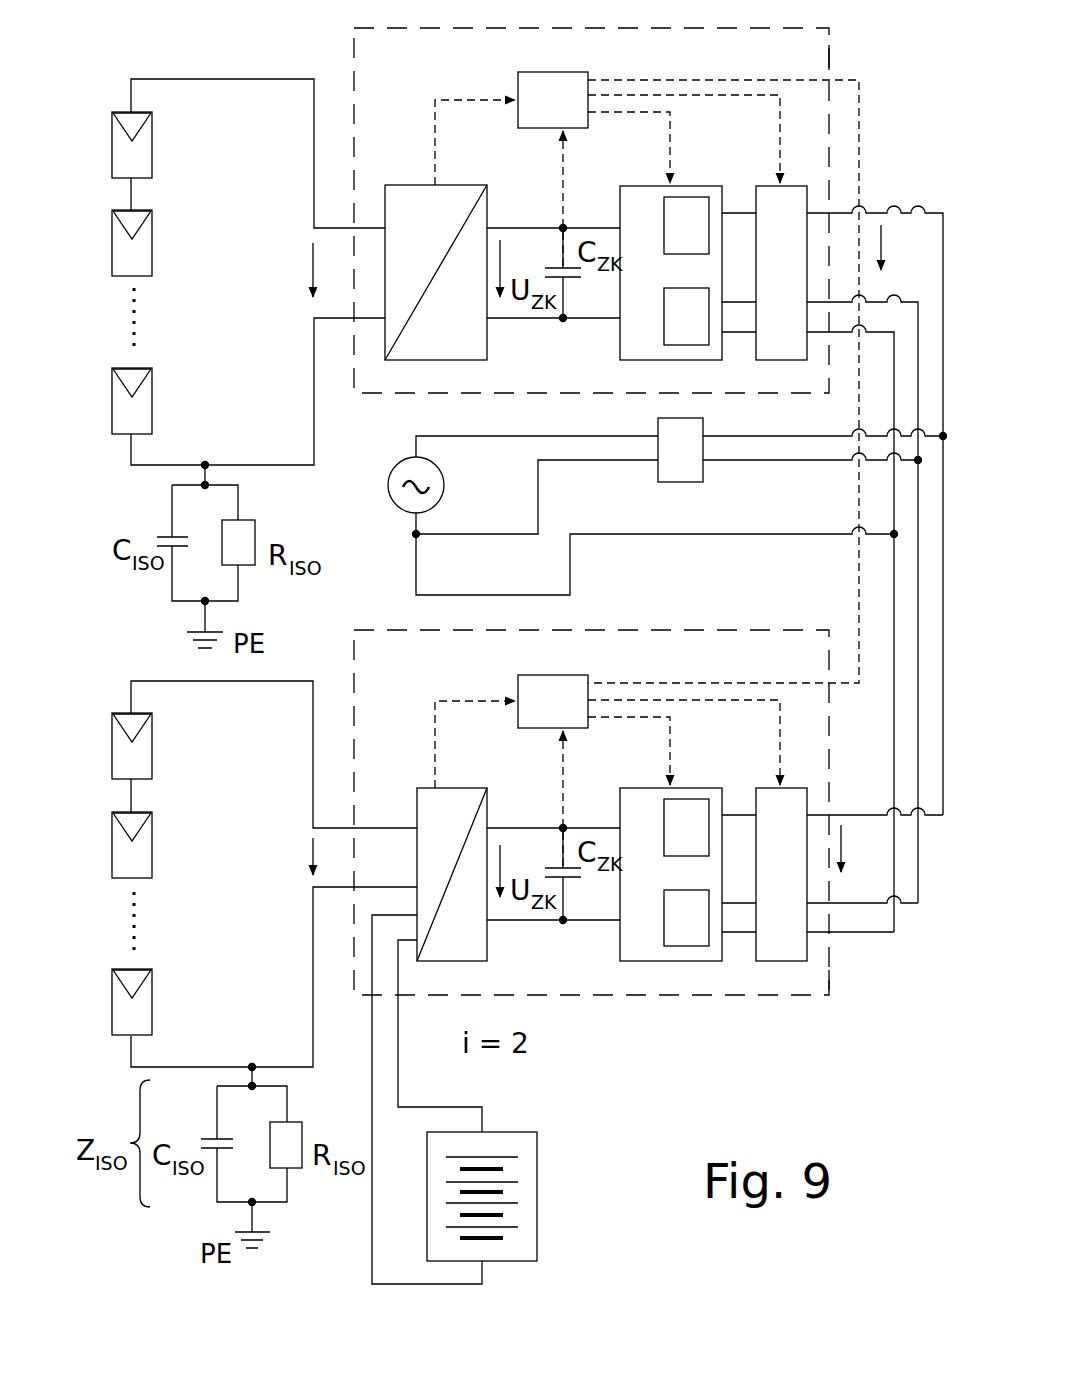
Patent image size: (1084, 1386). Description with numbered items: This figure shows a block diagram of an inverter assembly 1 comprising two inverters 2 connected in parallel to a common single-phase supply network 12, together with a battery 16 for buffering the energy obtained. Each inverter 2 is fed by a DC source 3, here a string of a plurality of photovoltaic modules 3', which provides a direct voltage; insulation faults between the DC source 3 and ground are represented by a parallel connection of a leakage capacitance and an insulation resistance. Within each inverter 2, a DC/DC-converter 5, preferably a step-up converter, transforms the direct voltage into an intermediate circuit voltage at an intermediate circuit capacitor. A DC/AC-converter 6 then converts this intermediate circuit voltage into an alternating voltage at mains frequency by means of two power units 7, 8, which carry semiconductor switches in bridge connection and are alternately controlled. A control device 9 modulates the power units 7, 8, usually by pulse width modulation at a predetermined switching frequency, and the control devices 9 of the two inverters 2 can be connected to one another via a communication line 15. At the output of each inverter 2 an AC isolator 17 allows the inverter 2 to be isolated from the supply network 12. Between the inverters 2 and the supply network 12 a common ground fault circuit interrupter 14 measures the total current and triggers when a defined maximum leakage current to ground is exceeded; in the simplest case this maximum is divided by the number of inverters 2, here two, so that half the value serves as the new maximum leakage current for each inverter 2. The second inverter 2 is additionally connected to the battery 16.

The inverter assembly 1 is at (660, 1052).
The inverter 2 is at (380, 81).
The DC source 3 is at (233, 540).
The photovoltaic module 3' is at (103, 569).
The DC/DC-converter 5 is at (406, 245).
The DC/AC-converter 6 is at (654, 285).
The power unit 7 is at (698, 240).
The power unit 8 is at (698, 330).
The control device 9 is at (541, 111).
The supply network 12 is at (389, 493).
The ground fault circuit interrupter 14 is at (658, 481).
The communication line 15 is at (830, 63).
The battery 16 is at (537, 1156).
The AC isolator 17 is at (797, 283).